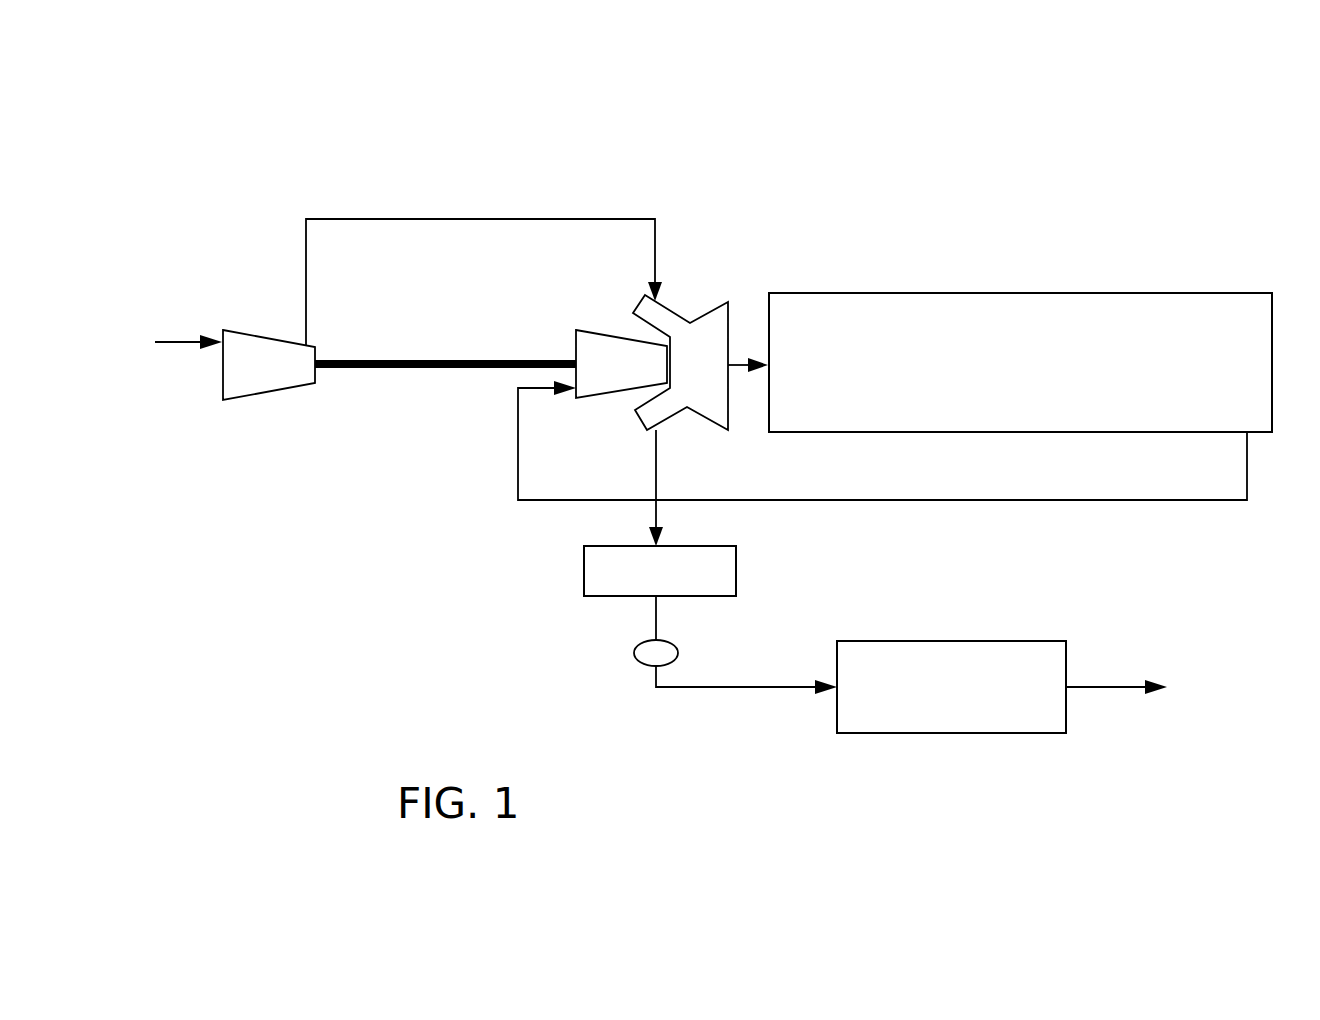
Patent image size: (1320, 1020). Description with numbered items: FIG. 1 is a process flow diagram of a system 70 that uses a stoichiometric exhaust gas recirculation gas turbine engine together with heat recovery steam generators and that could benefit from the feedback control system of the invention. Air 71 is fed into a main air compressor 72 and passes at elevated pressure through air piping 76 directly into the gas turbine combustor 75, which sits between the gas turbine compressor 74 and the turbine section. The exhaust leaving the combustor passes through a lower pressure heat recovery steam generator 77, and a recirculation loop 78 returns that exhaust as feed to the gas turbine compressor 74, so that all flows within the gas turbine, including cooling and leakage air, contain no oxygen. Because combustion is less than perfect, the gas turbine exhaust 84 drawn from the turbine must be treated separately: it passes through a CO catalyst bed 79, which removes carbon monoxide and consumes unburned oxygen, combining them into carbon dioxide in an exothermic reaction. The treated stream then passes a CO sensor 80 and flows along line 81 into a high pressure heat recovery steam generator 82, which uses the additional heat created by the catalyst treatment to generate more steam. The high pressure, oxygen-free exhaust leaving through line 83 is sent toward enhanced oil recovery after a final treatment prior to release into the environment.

The system 70 is at (348, 128).
The air 71 is at (174, 344).
The main air compressor 72 is at (262, 383).
The gas turbine compressor 74 is at (608, 332).
The combustor 75 is at (677, 312).
The air piping 76 is at (463, 218).
The lower pressure heat recovery steam generator 77 is at (1026, 371).
The recirculation loop 78 is at (923, 502).
The CO catalyst bed 79 is at (737, 570).
The sensor 80 is at (638, 648).
The exhaust line to HRSG 81 is at (750, 689).
The high pressure heat recovery steam generator 82 is at (948, 735).
The line 83 is at (1092, 689).
The gas turbine exhaust 84 is at (658, 469).